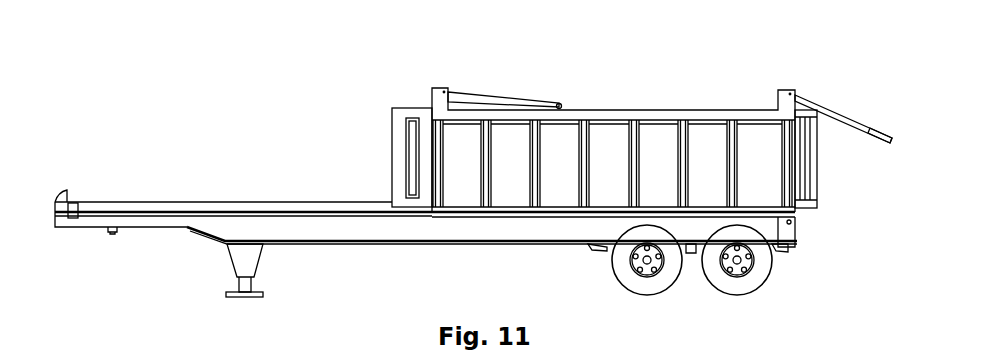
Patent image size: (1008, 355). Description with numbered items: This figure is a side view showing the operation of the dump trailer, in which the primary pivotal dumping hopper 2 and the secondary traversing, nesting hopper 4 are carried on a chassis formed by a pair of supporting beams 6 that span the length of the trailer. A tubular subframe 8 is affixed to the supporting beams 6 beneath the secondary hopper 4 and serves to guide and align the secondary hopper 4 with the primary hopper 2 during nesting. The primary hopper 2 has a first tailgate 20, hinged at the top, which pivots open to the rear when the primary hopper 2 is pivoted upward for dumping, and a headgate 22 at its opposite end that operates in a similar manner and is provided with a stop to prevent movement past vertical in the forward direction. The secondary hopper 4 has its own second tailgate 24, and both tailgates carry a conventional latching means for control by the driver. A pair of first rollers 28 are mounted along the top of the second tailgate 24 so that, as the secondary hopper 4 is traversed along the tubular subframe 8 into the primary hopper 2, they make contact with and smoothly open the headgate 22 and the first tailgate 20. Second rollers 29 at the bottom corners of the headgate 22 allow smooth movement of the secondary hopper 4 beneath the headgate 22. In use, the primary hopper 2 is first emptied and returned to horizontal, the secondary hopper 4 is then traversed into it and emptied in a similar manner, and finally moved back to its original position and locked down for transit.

The primary pivotal dumping hopper 2 is at (678, 108).
The secondary traversing, nesting hopper 4 is at (412, 107).
The supporting beams 6 is at (443, 246).
The tubular subframe 8 is at (306, 205).
The first tailgate 20 is at (863, 134).
The headgate 22 is at (497, 95).
The second tailgate 24 is at (819, 186).
The first rollers 28 is at (819, 105).
The second rollers 29 is at (563, 100).